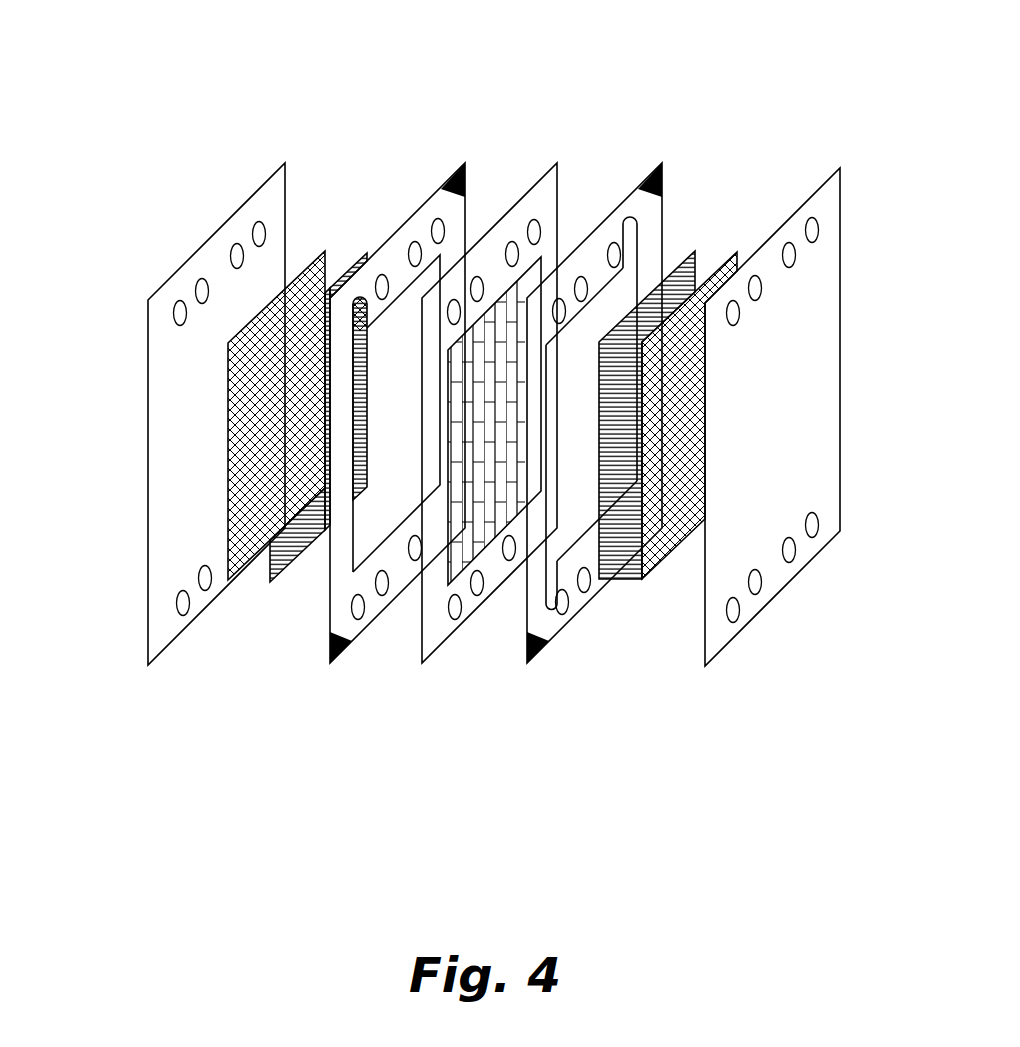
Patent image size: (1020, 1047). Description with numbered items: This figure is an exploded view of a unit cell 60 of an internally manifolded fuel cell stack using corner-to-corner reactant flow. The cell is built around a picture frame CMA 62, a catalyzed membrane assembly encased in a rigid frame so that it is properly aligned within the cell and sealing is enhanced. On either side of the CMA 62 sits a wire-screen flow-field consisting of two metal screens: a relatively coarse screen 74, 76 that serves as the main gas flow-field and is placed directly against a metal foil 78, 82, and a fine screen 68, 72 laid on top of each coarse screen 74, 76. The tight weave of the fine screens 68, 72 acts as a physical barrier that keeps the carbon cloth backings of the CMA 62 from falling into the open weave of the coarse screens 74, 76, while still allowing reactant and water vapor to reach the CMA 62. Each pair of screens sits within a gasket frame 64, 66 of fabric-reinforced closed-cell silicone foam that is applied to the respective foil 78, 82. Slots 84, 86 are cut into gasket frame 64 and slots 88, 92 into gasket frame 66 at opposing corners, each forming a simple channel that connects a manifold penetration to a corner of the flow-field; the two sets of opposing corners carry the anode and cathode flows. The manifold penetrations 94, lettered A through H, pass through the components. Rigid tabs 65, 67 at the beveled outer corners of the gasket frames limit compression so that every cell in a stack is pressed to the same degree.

The unit cell 60 is at (526, 72).
The CMA 62 is at (461, 481).
The gasket frame 64 is at (400, 444).
The tab 65 is at (466, 162).
The gasket frame 66 is at (571, 422).
The tab 67 is at (663, 163).
The fine screen 68 is at (265, 602).
The fine screen 72 is at (697, 239).
The coarse screen 74 is at (330, 236).
The coarse screen 76 is at (652, 597).
The metal foil 78 is at (140, 572).
The metal foil 82 is at (807, 413).
The slot 84 is at (358, 298).
The slot 86 is at (408, 476).
The slot 88 is at (630, 214).
The slot 92 is at (555, 600).
The penetrations for the manifolds 94 is at (824, 219).